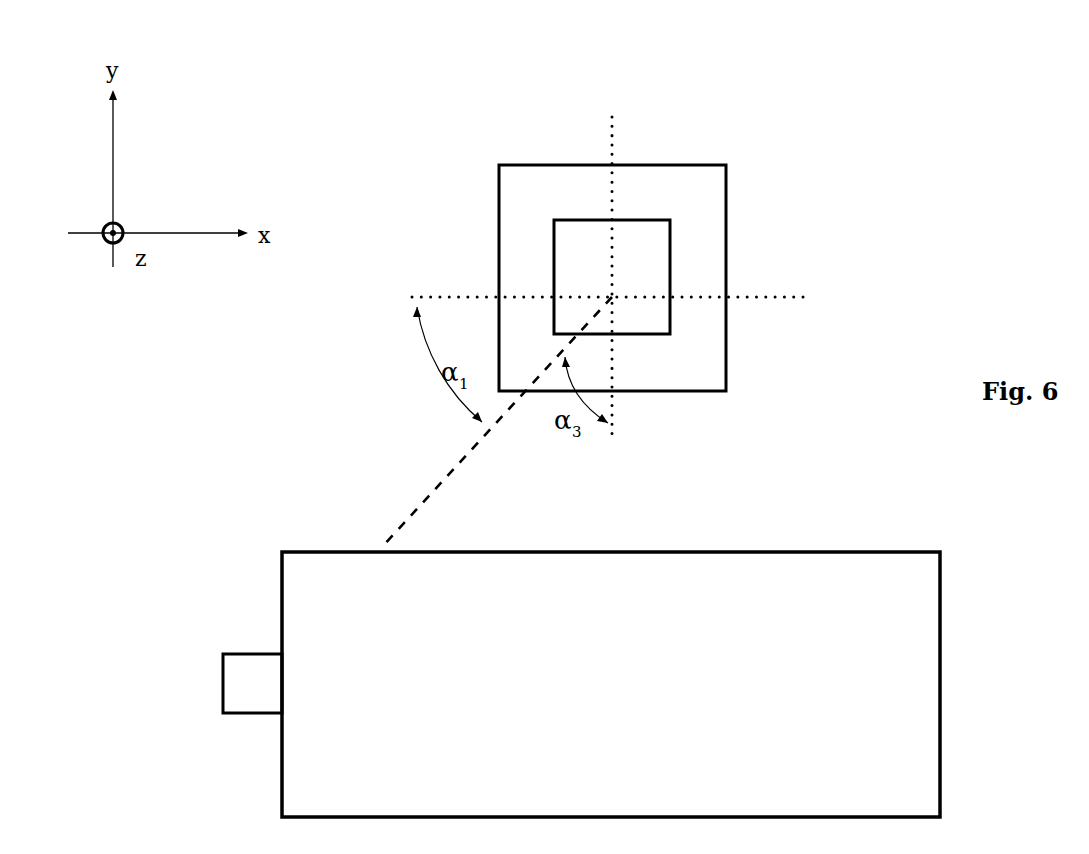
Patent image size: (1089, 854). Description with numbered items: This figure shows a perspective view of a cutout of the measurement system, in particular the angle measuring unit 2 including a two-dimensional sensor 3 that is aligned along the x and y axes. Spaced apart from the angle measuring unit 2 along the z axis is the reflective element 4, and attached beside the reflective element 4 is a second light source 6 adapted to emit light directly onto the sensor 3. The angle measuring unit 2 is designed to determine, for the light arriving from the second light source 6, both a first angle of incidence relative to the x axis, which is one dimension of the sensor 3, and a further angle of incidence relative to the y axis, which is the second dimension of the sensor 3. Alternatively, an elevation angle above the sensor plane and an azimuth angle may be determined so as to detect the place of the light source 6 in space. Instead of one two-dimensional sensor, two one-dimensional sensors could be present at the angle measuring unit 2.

The angle measuring unit 2 is at (726, 197).
The sensor 3 is at (670, 315).
The reflective element 4 is at (813, 552).
The second light source 6 is at (222, 698).